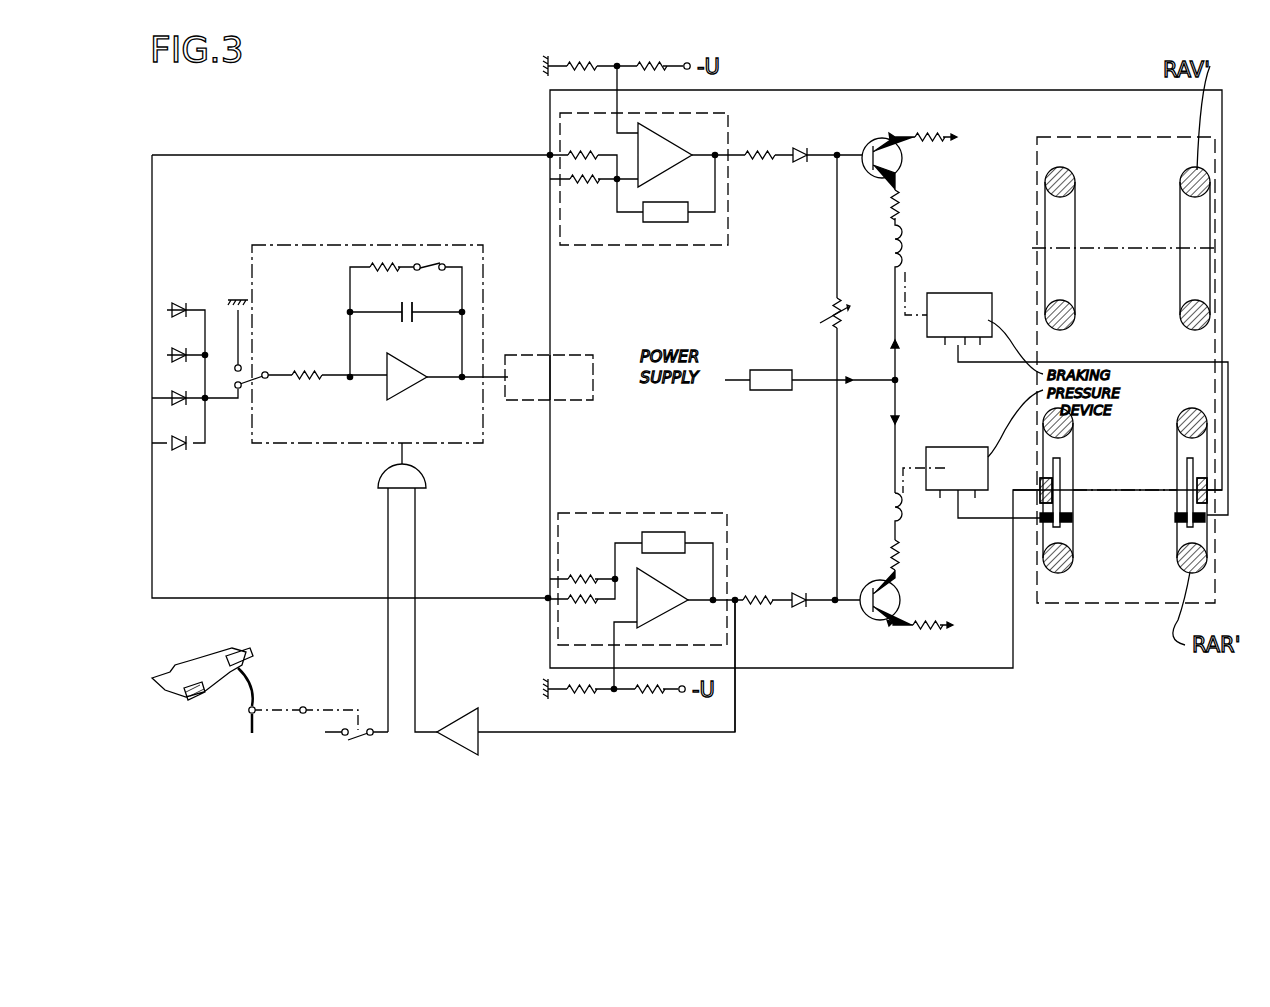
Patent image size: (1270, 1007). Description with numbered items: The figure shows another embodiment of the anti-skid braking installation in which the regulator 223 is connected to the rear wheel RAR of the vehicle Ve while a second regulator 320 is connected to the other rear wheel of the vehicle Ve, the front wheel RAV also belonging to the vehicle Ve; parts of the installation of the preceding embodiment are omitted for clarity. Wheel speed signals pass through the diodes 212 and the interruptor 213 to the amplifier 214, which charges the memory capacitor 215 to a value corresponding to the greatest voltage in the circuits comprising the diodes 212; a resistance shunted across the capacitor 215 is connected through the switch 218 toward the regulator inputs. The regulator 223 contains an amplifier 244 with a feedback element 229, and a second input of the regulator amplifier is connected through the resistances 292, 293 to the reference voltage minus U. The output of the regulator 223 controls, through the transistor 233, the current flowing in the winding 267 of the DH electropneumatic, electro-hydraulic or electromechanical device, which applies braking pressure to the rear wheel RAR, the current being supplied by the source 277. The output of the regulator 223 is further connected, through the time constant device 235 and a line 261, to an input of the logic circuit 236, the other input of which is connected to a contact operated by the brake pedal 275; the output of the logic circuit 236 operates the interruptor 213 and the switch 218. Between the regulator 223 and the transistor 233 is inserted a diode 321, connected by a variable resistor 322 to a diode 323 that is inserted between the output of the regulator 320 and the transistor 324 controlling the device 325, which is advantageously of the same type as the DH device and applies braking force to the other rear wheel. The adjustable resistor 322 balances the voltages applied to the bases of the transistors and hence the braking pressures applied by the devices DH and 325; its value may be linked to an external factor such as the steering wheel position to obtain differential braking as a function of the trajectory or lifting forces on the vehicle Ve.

The diodes 212 is at (184, 405).
The interruptor 213 is at (251, 366).
The amplifier 214 is at (402, 387).
The memory capacitor 215 is at (411, 324).
The switch 218 is at (425, 262).
The regulator 223 is at (703, 515).
The feedback element 229 is at (662, 530).
The transistor 233 is at (896, 590).
The time constant device 235 is at (470, 742).
The logic circuit 236 is at (410, 470).
The amplifier 244 is at (655, 606).
The line 261 is at (714, 734).
The inductor 267 is at (906, 526).
The brake pedal 275 is at (250, 667).
The source 277 is at (783, 392).
The resistance 292 is at (580, 697).
The resistance 293 is at (649, 698).
The regulator 320 is at (708, 236).
The diode 321 is at (802, 592).
The variable resistor 322 is at (832, 310).
The diode 323 is at (806, 146).
The transistor 324 is at (876, 148).
The device 325 is at (946, 298).
The braking pressure device DH is at (946, 457).
The front wheel RAV is at (1072, 170).
The vehicle Ve is at (1102, 163).
The rear wheel RAR is at (1056, 572).